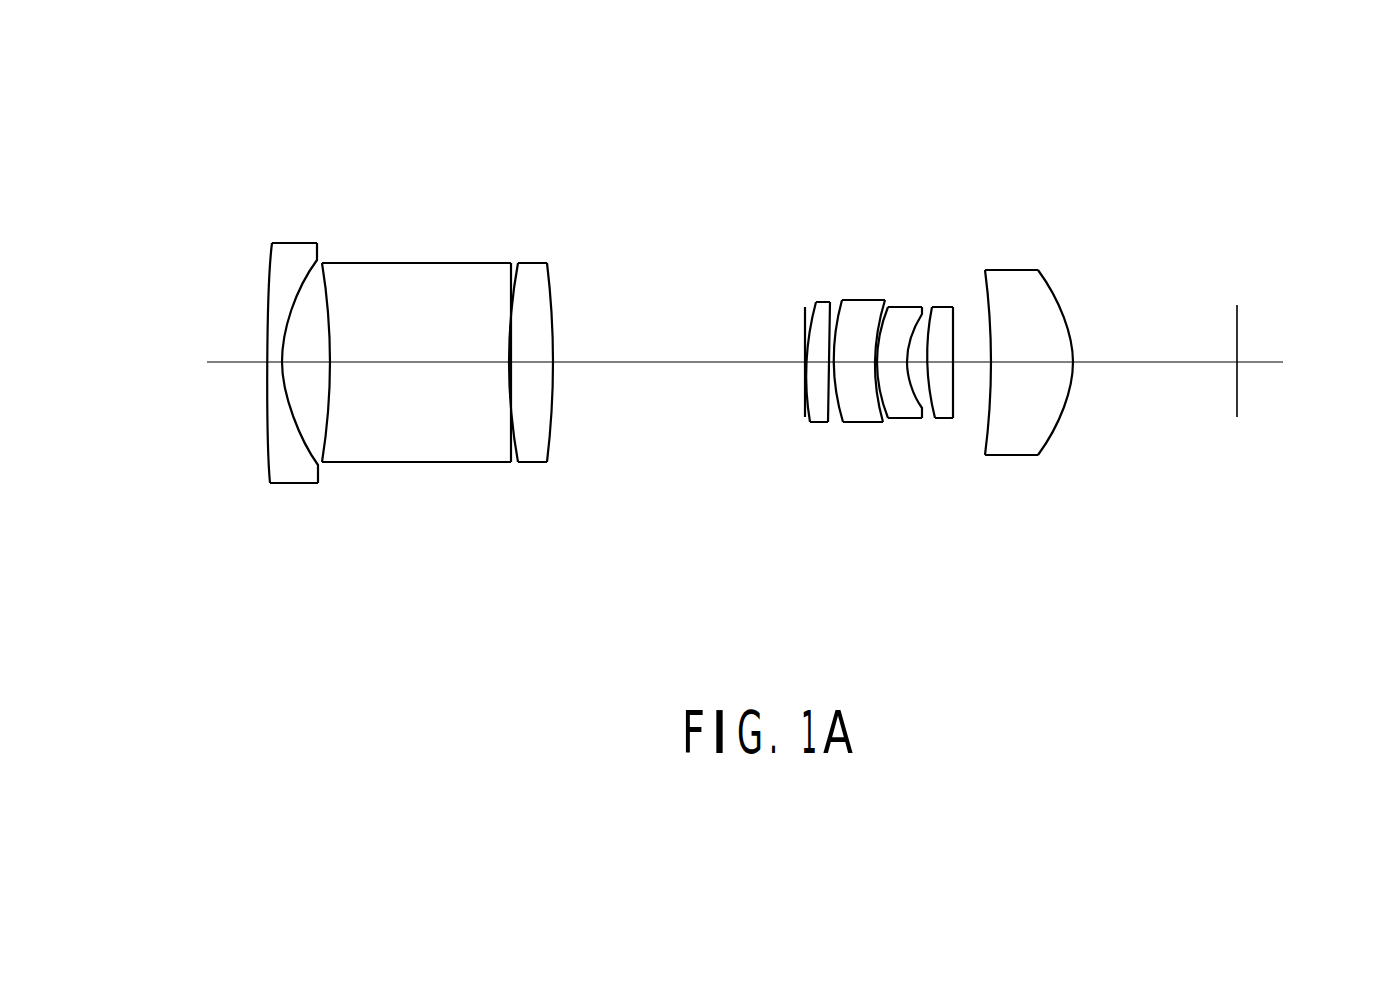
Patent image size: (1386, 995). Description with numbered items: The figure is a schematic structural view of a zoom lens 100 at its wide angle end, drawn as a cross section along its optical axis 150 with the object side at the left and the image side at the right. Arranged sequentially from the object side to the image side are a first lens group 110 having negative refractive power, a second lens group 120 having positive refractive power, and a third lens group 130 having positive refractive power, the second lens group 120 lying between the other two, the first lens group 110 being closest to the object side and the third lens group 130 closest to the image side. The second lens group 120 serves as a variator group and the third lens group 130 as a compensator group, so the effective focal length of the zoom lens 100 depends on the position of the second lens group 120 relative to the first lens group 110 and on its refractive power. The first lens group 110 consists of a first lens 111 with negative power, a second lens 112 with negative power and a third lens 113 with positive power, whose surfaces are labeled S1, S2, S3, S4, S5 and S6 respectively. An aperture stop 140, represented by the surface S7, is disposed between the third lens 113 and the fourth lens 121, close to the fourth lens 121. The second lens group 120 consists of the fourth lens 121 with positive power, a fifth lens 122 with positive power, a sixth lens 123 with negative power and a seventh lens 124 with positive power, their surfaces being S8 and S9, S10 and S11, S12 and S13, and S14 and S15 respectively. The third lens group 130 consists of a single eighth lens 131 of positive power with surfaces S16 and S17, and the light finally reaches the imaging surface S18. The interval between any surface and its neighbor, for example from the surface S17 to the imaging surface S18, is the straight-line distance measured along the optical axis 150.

The zoom lens 100 is at (1263, 677).
The first lens group 110 is at (413, 112).
The first lens 111 is at (288, 272).
The second lens 112 is at (367, 308).
The third lens 113 is at (525, 308).
The second lens group 120 is at (970, 112).
The fourth lens 121 is at (822, 317).
The fifth lens 122 is at (862, 317).
The sixth lens 123 is at (900, 322).
The seventh lens 124 is at (943, 322).
The third lens group 130 is at (1133, 112).
The eighth lens 131 is at (1021, 310).
The aperture stop 140 is at (803, 318).
The optical axis 150 is at (230, 363).
The surface S1 is at (252, 457).
The surface S2 is at (302, 457).
The surface S3 is at (338, 467).
The surface S4 is at (493, 467).
The surface S5 is at (532, 467).
The surface S6 is at (572, 467).
The surface S7 is at (775, 489).
The surface S8 is at (807, 486).
The surface S9 is at (846, 486).
The surface S10 is at (878, 485).
The surface S11 is at (890, 416).
The surface S12 is at (909, 446).
The surface S13 is at (949, 477).
The surface S14 is at (960, 420).
The surface S15 is at (1008, 414).
The surface S16 is at (1048, 375).
The surface S17 is at (1102, 410).
The imaging surface S18 is at (1204, 449).